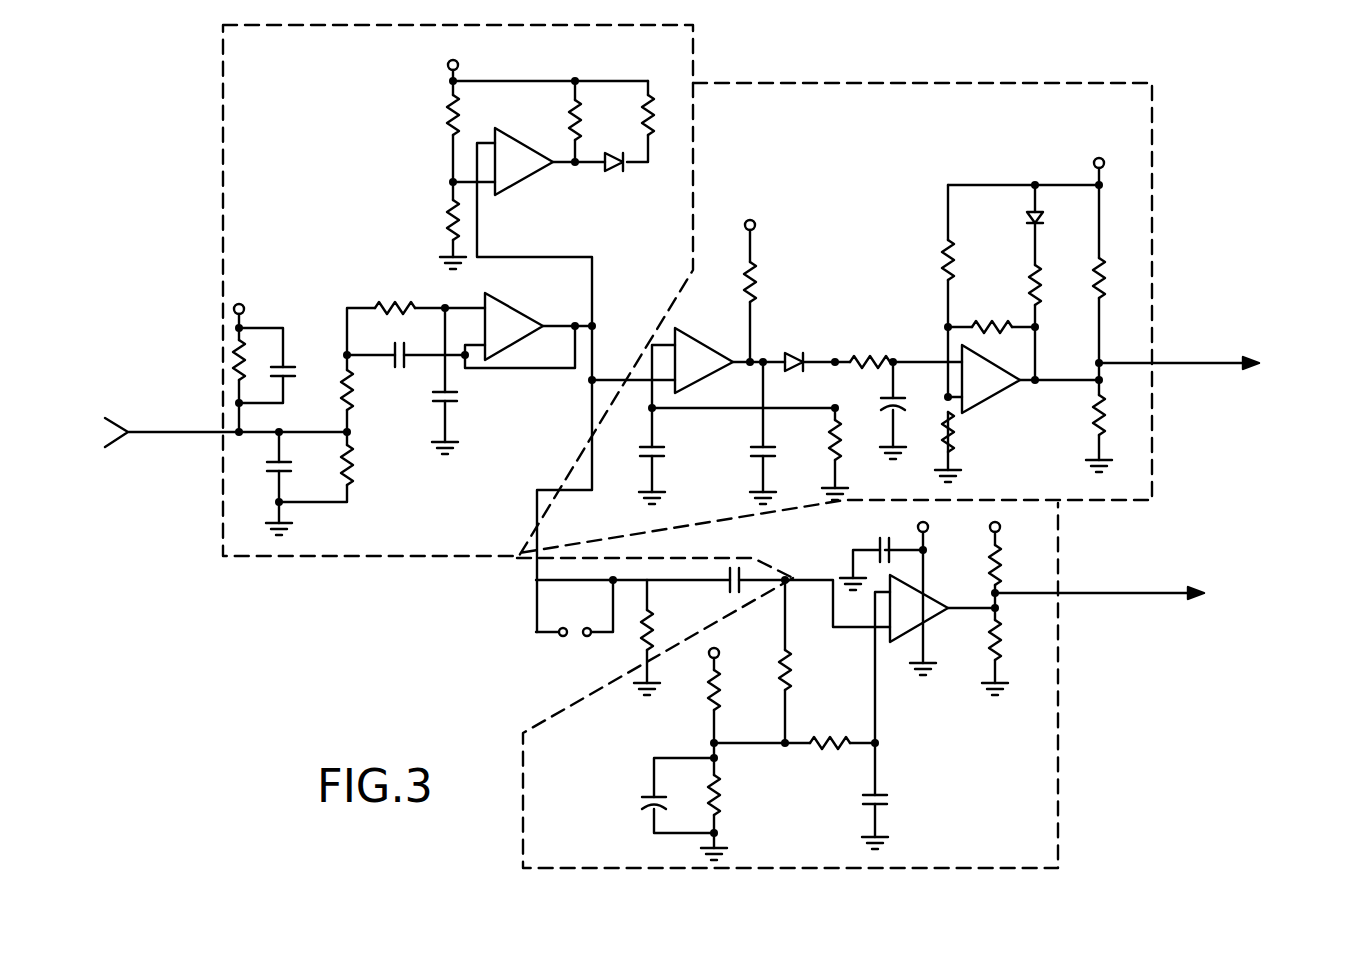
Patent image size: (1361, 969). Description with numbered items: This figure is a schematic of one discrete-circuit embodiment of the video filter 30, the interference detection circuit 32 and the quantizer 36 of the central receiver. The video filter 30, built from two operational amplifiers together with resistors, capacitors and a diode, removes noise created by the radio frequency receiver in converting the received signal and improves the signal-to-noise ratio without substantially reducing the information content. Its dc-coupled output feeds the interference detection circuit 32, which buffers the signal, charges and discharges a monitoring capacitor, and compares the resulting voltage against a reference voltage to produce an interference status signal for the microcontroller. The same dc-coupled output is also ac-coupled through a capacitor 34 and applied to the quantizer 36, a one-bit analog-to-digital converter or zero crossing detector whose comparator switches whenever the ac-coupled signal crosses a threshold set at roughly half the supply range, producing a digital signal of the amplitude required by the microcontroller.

The video filter 30 is at (395, 46).
The interference detection circuit 32 is at (1072, 90).
The capacitor 34 is at (753, 560).
The quantizer 36 is at (1060, 796).